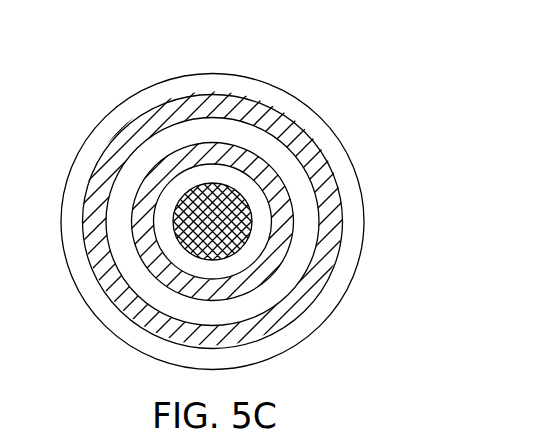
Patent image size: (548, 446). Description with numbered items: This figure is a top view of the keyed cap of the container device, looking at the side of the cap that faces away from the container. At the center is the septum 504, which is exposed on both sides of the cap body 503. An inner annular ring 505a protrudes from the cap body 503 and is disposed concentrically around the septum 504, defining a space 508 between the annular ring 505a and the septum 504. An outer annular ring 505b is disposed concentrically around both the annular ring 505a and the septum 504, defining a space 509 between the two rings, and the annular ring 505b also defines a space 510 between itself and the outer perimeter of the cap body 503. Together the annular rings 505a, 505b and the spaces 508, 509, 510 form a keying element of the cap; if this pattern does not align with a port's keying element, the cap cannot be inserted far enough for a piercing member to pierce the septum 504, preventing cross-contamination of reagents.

The cap body 503 is at (362, 195).
The septum 504 is at (202, 183).
The annular ring 505a is at (298, 138).
The annular ring 505b is at (232, 148).
The space 508 is at (163, 195).
The space 509 is at (115, 232).
The space 510 is at (107, 307).